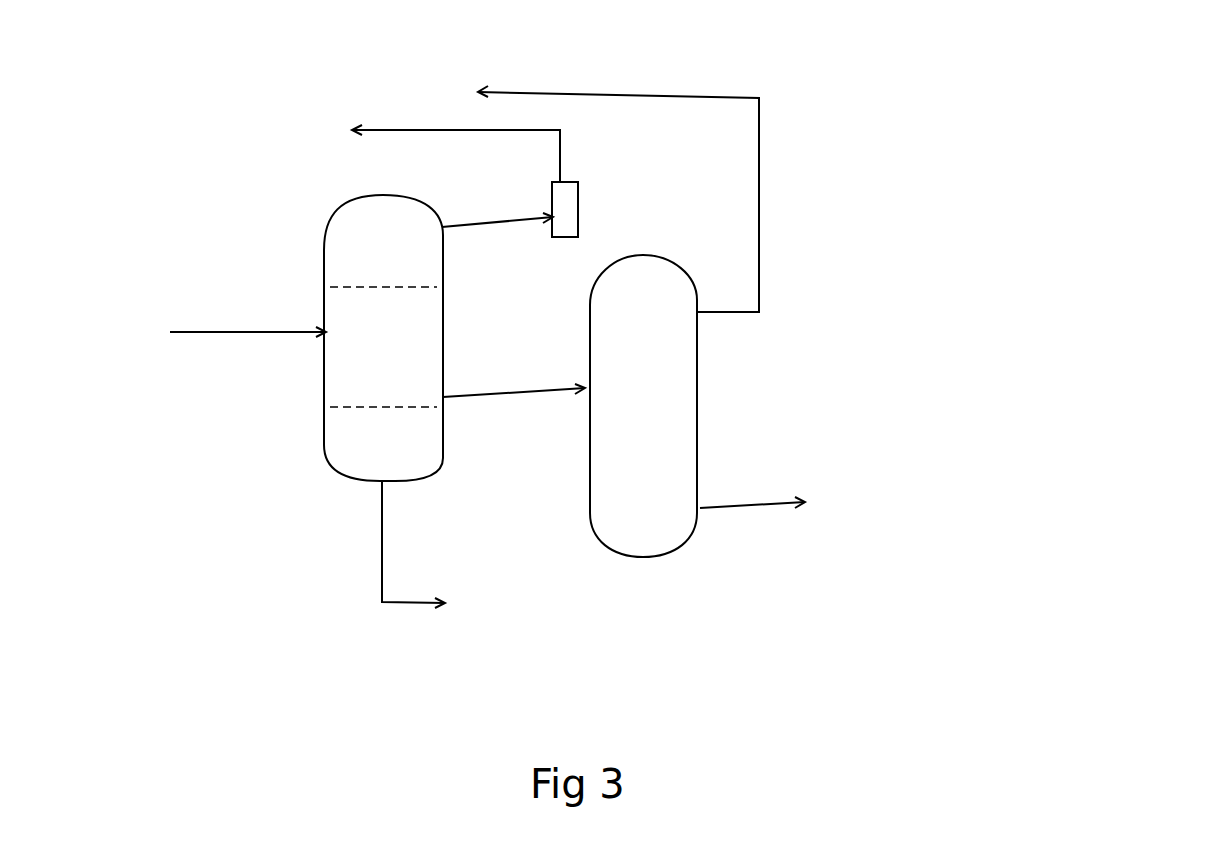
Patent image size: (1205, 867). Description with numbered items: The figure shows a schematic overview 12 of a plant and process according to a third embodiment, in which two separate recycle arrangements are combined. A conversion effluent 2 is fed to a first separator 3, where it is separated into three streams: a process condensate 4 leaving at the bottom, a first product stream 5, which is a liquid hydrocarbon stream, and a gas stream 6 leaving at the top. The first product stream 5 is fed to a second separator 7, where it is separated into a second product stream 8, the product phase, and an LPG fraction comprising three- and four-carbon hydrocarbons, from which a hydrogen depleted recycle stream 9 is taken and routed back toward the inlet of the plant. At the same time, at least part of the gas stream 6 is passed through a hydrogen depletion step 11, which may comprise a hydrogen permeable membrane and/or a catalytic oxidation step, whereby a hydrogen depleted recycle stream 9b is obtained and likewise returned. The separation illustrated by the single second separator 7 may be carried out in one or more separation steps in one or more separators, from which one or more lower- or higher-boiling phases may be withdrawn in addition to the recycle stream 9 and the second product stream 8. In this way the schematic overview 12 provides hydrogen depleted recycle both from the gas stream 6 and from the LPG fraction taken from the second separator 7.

The conversion effluent 2 is at (232, 335).
The first separator 3 is at (338, 203).
The process condensate 4 is at (402, 603).
The first product stream 5 is at (493, 397).
The gas stream 6 is at (490, 227).
The second separator 7 is at (665, 557).
The second product stream 8 is at (757, 507).
The recycle stream 9 is at (760, 217).
The hydrogen depleted recycle stream 9b is at (402, 125).
The hydrogen depletion step 11 is at (578, 205).
The schematic overview 12 is at (1003, 155).